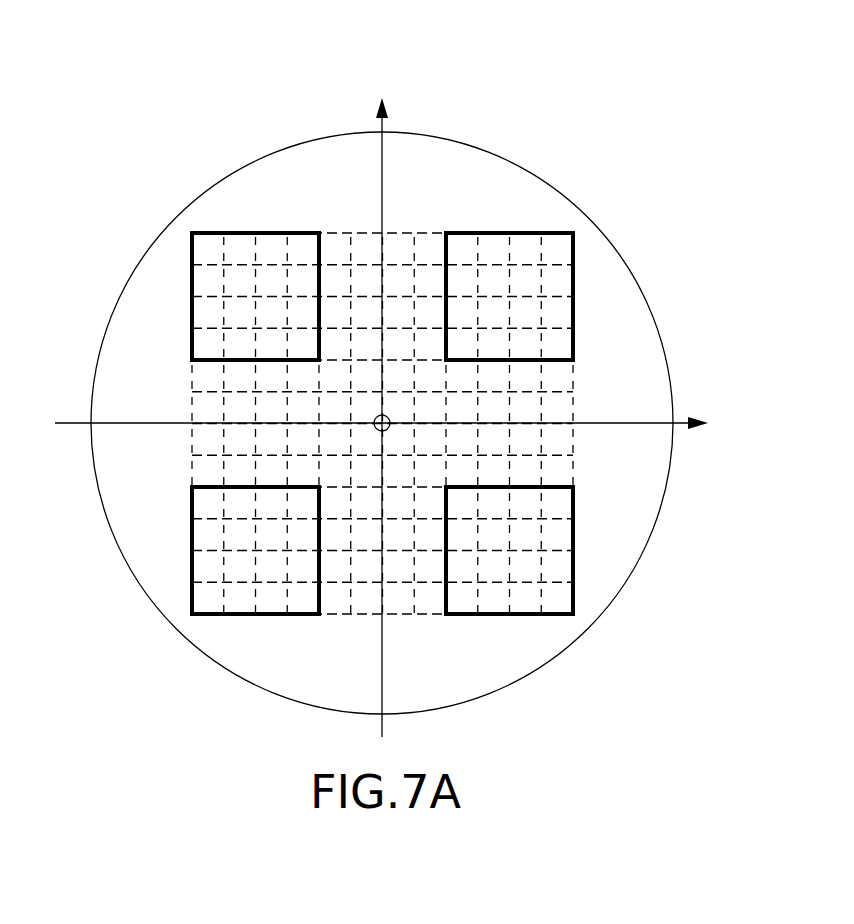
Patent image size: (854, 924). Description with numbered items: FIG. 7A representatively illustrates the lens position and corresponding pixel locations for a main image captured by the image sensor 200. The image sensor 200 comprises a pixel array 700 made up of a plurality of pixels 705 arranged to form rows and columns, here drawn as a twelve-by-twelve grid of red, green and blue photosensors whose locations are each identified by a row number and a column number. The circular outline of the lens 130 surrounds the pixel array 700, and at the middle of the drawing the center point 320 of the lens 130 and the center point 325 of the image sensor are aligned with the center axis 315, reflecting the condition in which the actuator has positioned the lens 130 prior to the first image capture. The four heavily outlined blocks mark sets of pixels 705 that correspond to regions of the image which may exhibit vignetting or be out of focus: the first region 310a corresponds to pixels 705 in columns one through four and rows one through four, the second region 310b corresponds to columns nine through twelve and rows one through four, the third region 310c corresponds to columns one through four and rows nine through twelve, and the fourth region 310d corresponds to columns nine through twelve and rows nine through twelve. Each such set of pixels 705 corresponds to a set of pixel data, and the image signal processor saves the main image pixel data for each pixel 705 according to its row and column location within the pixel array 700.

The image sensor 200 is at (404, 401).
The lens 130 is at (470, 138).
The pixel array 700 is at (408, 426).
The pixel 705 is at (222, 240).
The first region 310a is at (192, 280).
The second region 310b is at (573, 285).
The third region 310c is at (265, 614).
The fourth region 310d is at (573, 537).
The center axis 315 is at (527, 278).
The center point of the image sensor 325 is at (382, 423).
The center point of the lens 320 is at (382, 423).